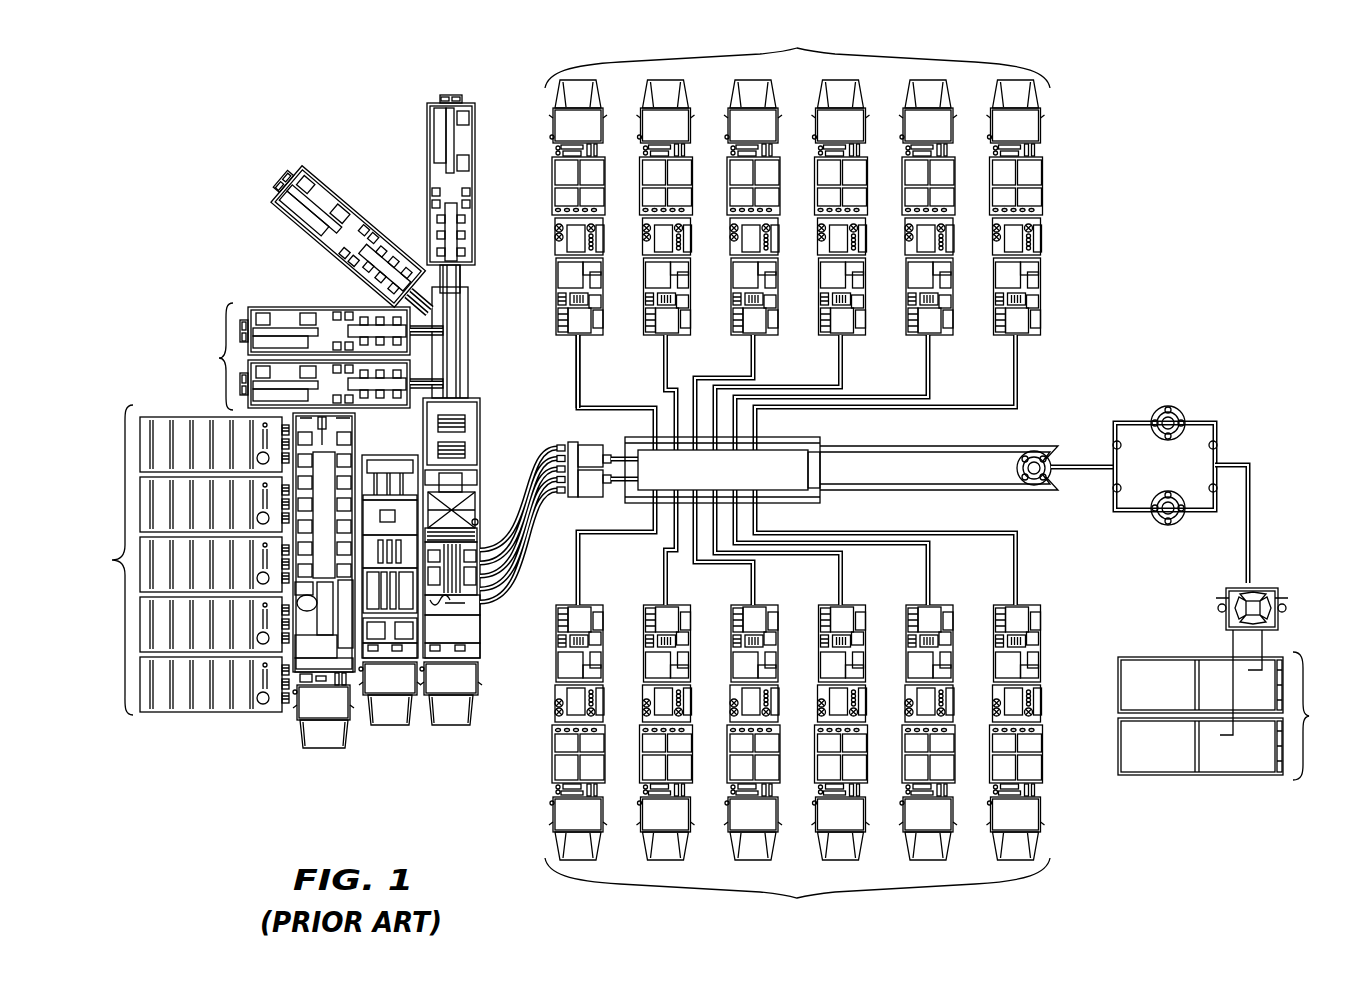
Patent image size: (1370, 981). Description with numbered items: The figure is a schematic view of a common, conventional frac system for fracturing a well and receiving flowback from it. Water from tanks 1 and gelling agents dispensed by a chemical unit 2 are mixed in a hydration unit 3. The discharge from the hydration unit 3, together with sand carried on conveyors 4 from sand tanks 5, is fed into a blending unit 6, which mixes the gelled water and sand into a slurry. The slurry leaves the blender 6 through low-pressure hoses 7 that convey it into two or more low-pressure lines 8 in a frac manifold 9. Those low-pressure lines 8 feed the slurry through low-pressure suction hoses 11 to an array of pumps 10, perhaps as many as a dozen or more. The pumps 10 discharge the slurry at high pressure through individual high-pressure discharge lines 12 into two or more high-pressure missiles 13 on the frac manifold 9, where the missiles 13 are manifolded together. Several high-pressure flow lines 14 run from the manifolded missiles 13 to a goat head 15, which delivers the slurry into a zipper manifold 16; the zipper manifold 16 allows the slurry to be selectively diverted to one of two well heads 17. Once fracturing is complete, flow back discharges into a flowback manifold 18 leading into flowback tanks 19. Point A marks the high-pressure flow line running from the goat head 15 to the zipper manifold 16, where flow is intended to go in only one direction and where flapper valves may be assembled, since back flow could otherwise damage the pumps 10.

The tanks 1 is at (112, 560).
The chemical unit 2 is at (390, 716).
The hydration unit 3 is at (325, 738).
The conveyors 4 is at (458, 352).
The sand tanks 5 is at (452, 95).
The blending unit 6 is at (452, 716).
The low-pressure hoses 7 is at (512, 456).
The low-pressure lines 8 is at (808, 497).
The frac manifold 9 is at (730, 481).
The pumps 10 is at (797, 48).
The suction hoses 11 is at (573, 362).
The discharge lines 12 is at (582, 373).
The missiles 13 is at (812, 437).
The high-pressure flow lines 14 is at (917, 448).
The goat head 15 is at (1050, 478).
The zipper manifold 16 is at (1135, 512).
The well heads 17 is at (1157, 408).
The flowback manifold 18 is at (1278, 605).
The flowback tanks 19 is at (1309, 716).
The point A is at (1089, 452).